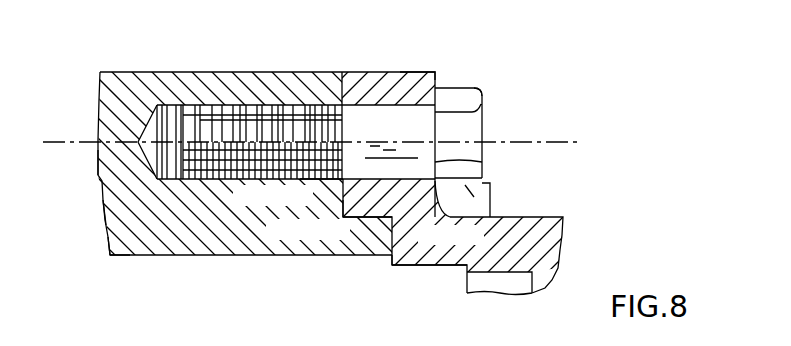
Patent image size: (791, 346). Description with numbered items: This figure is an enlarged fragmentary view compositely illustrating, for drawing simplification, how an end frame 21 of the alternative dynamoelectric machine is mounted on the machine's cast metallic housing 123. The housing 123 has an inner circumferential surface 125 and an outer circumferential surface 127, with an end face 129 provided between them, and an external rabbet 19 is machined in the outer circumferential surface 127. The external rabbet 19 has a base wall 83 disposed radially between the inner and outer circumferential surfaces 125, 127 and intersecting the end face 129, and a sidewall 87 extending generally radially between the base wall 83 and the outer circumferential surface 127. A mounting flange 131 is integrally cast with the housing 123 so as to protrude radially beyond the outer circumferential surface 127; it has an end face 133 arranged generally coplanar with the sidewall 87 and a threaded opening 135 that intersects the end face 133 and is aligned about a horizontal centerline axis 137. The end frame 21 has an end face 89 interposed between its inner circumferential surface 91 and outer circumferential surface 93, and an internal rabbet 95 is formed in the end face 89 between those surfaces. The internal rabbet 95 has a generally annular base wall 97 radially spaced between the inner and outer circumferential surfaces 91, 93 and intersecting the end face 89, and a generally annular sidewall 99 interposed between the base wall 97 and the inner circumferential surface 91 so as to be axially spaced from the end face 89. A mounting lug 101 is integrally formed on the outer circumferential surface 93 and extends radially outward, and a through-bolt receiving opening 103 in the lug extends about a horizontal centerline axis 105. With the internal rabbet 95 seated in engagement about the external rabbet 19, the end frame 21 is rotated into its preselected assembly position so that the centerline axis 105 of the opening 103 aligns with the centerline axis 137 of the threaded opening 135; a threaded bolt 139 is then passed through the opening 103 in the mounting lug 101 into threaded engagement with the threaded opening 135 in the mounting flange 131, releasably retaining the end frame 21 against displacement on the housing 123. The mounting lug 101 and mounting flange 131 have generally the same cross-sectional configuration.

The external rabbet 19 is at (280, 261).
The end frame 21 is at (707, 236).
The base wall 83 is at (360, 222).
The sidewall 87 is at (343, 193).
The end face 89 is at (480, 162).
The inner circumferential surface 91 is at (466, 271).
The outer circumferential surface 93 is at (497, 198).
The internal rabbet 95 is at (428, 138).
The base wall 97 is at (418, 232).
The sidewall 99 is at (418, 266).
The mounting lug 101 is at (407, 72).
The through-bolt receiving opening 103 is at (483, 110).
The horizontal centerline axis 105 is at (547, 142).
The housing 123 is at (108, 217).
The inner circumferential surface 125 is at (112, 258).
The outer circumferential surface 127 is at (100, 165).
The end face 129 is at (378, 254).
The mounting flange 131 is at (133, 72).
The end face 133 is at (329, 72).
The threaded opening 135 is at (203, 105).
The horizontal centerline axis 137 is at (60, 142).
The threaded bolt 139 is at (481, 92).